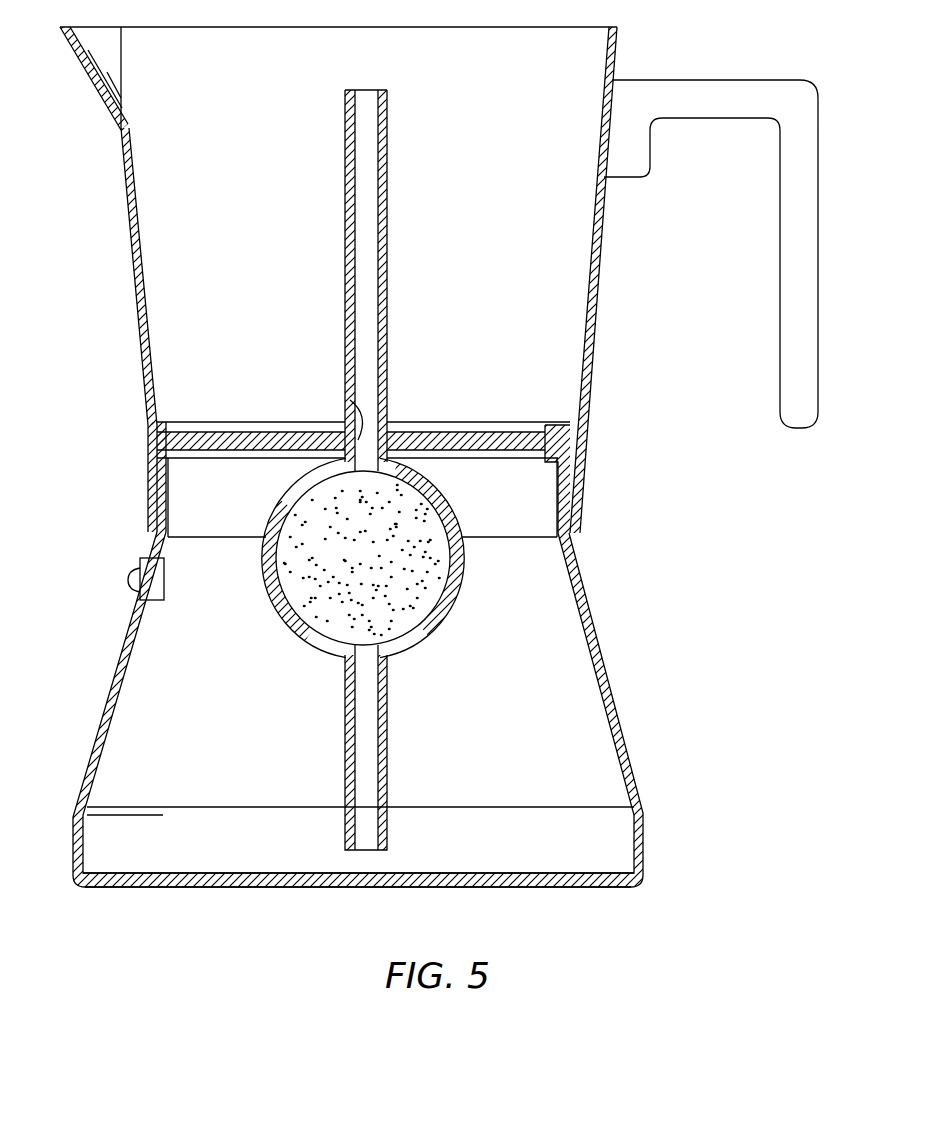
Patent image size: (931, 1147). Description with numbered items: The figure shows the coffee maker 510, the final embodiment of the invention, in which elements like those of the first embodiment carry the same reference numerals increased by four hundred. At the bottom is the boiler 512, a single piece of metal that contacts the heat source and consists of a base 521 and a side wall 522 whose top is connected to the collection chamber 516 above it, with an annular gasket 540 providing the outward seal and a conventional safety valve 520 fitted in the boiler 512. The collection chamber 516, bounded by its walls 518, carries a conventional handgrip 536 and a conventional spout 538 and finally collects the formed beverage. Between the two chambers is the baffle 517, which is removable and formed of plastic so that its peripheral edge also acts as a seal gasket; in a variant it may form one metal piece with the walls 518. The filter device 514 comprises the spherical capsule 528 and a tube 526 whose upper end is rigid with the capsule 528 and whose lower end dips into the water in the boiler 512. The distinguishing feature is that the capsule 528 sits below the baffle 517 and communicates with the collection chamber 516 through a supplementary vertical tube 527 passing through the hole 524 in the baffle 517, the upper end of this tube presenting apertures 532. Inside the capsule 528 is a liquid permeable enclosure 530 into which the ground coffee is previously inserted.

The coffee maker 510 is at (100, 460).
The boiler 512 is at (645, 761).
The filter device 514 is at (440, 628).
The collection chamber 516 is at (125, 279).
The baffle 517 is at (226, 457).
The walls of the collection chamber 518 is at (593, 316).
The safety valve 520 is at (133, 585).
The base 521 is at (572, 890).
The side wall 522 is at (73, 835).
The hole 524 is at (345, 396).
The tube 526 is at (345, 745).
The supplementary vertical tube 527 is at (388, 223).
The capsule 528 is at (277, 617).
The liquid permeable enclosure 530 is at (303, 643).
The apertures 532 is at (363, 100).
The handgrip 536 is at (778, 272).
The spout 538 is at (88, 72).
The annular gasket 540 is at (545, 468).